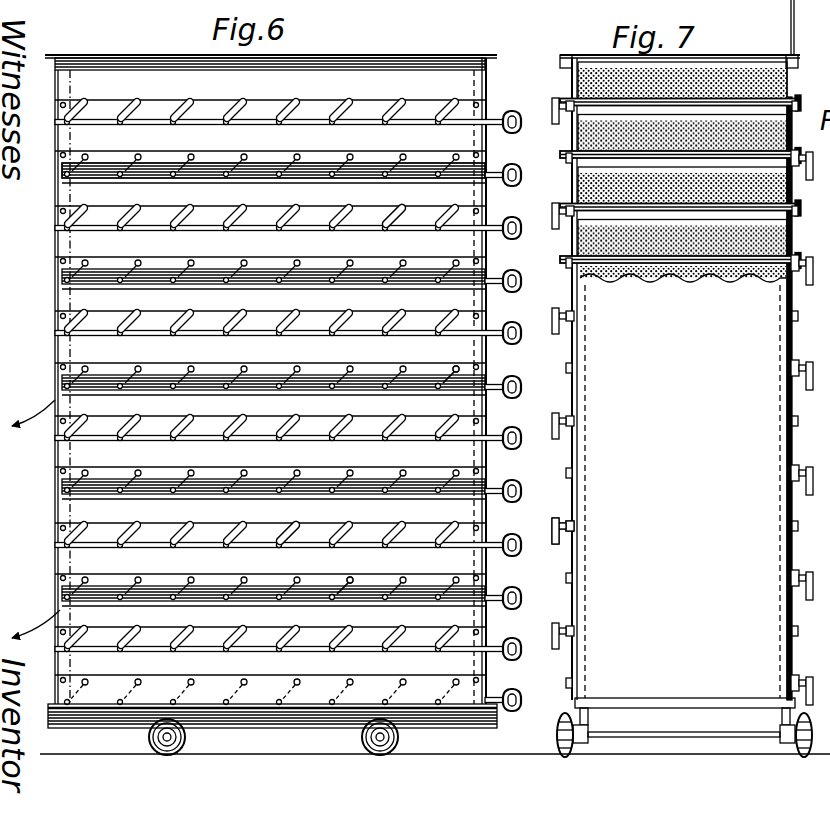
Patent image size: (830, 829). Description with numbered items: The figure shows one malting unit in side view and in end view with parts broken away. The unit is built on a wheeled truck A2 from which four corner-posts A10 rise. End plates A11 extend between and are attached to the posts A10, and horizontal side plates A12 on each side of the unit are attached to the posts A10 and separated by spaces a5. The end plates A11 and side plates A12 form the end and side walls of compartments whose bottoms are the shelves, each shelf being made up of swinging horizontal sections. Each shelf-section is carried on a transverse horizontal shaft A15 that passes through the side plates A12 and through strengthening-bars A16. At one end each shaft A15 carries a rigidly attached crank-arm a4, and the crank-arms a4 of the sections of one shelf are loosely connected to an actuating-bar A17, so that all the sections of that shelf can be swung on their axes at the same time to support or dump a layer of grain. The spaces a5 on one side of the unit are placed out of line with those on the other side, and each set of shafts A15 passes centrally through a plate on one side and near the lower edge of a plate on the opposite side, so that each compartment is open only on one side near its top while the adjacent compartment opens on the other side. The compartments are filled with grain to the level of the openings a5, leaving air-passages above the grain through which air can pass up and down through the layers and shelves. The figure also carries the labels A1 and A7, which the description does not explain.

In FIG. 6, the drying rack truck A1 is at (271, 51).
In FIG. 7, the drying rack truck A1 is at (620, 72).
In FIG. 6, the wheeled truck A2 is at (438, 730).
In FIG. 7, the wheeled truck A2 is at (675, 700).
In FIG. 7, the handle bracket A7 is at (562, 518).
In FIG. 6, the corner-post A10 is at (492, 172).
In FIG. 7, the corner-post A10 is at (778, 58).
In FIG. 6, the end plate A11 is at (484, 80).
In FIG. 7, the end plate A11 is at (676, 379).
In FIG. 6, the side plate A12 is at (160, 90).
In FIG. 7, the transverse horizontal shaft A15 is at (740, 106).
In FIG. 6, the strengthening-bar A16 is at (429, 104).
In FIG. 7, the strengthening-bar A16 is at (612, 262).
In FIG. 6, the actuating-bar A17 is at (454, 334).
In FIG. 6, the crank-arm a4 is at (381, 229).
In FIG. 6, the space a5 is at (93, 278).
In FIG. 7, the space a5 is at (572, 186).